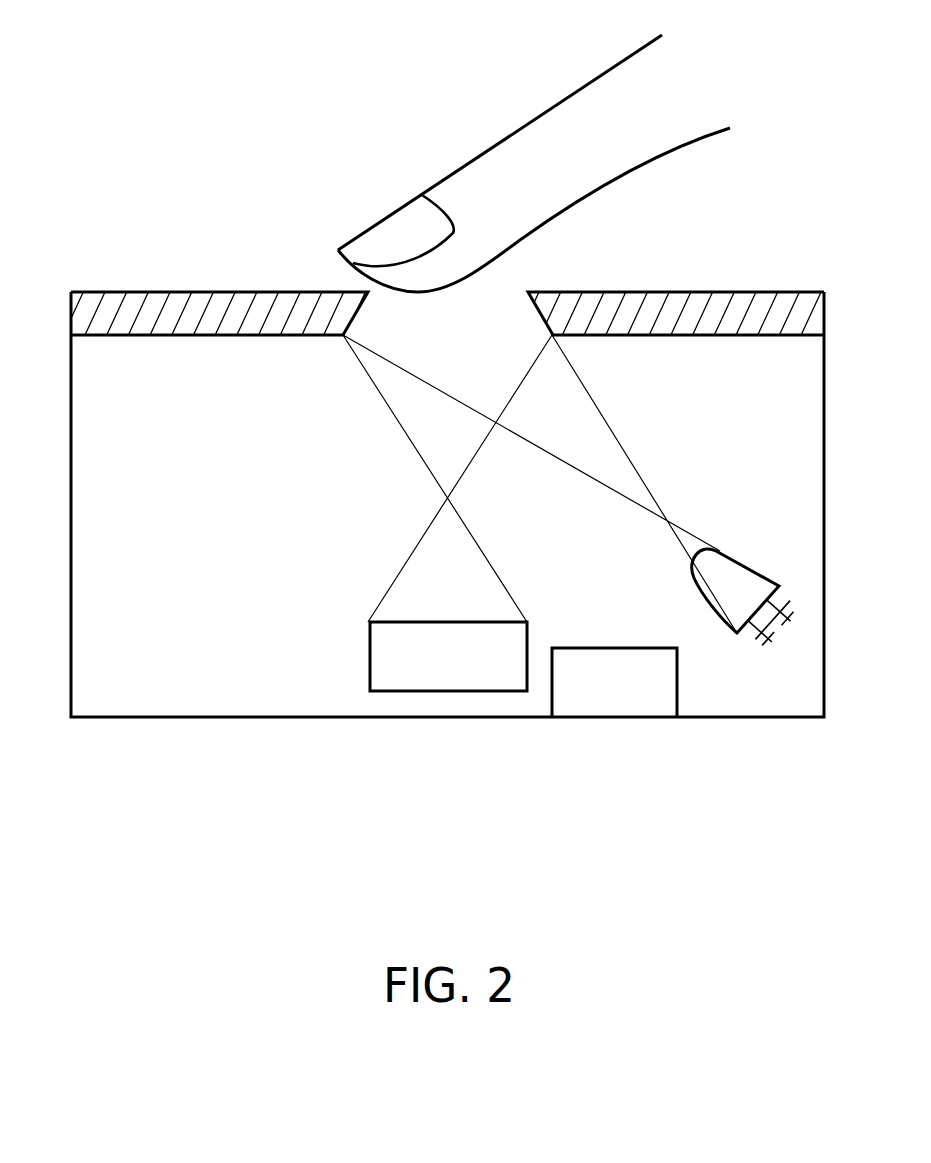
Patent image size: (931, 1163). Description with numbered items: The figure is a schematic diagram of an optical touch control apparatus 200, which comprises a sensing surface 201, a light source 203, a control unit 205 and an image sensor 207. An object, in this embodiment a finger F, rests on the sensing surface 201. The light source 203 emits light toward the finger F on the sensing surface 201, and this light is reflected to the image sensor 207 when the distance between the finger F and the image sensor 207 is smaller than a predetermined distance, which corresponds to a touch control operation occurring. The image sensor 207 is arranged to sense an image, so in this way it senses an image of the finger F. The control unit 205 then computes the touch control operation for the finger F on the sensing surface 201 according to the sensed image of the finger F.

The optical touch control apparatus 200 is at (188, 104).
The sensing surface 201 is at (186, 318).
The light source 203 is at (748, 645).
The control unit 205 is at (614, 718).
The image sensor 207 is at (447, 692).
The finger F is at (500, 153).